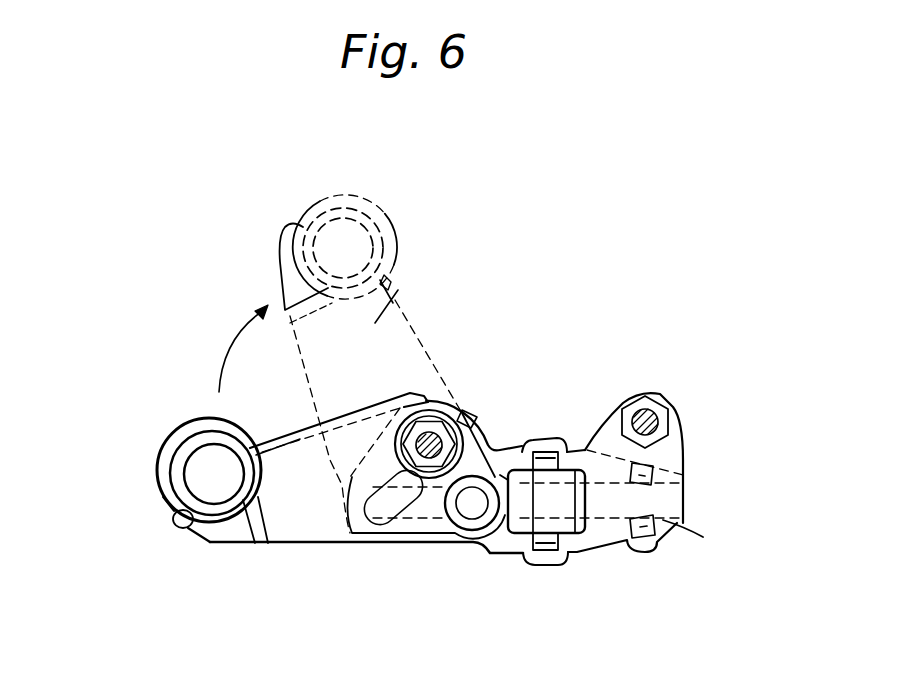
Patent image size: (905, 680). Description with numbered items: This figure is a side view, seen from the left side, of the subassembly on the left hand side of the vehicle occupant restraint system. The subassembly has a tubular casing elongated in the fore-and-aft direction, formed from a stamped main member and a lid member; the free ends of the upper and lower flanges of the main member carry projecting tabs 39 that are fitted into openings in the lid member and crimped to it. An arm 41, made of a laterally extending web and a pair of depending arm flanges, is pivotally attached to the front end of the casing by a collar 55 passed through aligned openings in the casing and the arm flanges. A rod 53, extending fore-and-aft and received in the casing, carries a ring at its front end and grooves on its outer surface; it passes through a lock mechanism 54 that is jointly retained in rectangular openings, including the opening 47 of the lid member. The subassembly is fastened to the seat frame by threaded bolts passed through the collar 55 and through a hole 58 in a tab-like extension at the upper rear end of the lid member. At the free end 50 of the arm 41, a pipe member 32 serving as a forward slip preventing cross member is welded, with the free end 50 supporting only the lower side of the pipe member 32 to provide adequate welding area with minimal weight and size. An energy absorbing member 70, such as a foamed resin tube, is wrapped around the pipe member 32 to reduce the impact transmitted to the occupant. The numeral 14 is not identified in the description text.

The base body 14 is at (163, 487).
The pipe member 32 is at (195, 470).
The projecting tabs 39 is at (540, 566).
The arm 41 is at (313, 532).
The rectangular opening 47 is at (579, 505).
The free end 50 is at (287, 243).
The rod 53 is at (703, 540).
The lock mechanism 54 is at (558, 492).
The collar 55 is at (470, 421).
The hole 58 is at (672, 407).
The energy absorbing member 70 is at (400, 240).